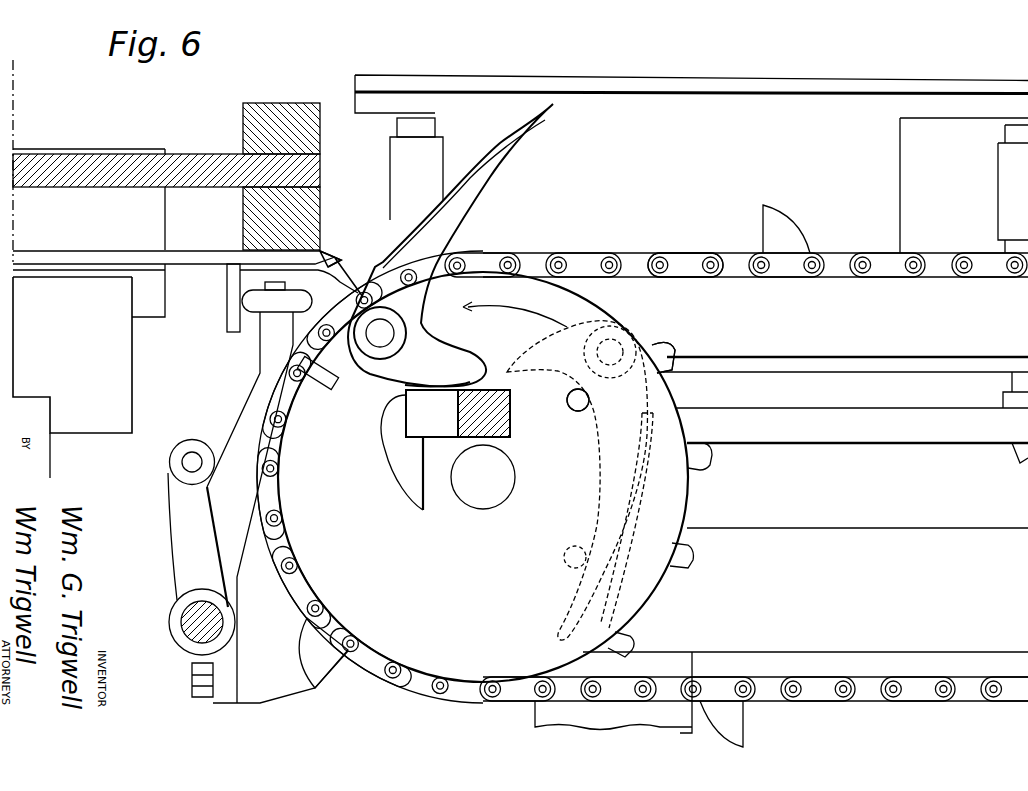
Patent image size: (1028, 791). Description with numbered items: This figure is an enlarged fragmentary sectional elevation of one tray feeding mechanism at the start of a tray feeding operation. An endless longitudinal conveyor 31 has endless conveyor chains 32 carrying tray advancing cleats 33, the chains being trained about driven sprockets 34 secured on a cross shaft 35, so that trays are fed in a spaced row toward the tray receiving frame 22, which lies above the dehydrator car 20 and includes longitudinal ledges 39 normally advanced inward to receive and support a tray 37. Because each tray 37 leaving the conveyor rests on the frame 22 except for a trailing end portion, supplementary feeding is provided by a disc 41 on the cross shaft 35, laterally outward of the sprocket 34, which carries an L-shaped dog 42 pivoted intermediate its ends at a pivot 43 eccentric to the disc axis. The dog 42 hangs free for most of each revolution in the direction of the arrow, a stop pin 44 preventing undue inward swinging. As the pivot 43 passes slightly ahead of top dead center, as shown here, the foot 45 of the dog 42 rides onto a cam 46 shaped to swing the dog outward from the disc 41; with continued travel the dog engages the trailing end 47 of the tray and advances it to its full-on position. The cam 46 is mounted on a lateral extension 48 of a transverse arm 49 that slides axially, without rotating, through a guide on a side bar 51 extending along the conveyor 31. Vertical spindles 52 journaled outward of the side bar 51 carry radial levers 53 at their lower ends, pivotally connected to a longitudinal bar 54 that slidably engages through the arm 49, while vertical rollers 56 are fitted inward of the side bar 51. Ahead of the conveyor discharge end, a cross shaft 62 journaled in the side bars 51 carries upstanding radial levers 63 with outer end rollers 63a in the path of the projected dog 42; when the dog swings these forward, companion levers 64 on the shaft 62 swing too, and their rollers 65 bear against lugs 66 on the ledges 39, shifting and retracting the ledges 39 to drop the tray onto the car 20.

The dehydrator car 20 is at (117, 372).
The tray receiving frame 22 is at (179, 229).
The endless longitudinal conveyor 31 is at (596, 245).
The endless conveyor chains 32 is at (677, 262).
The tray advancing cleats 33 is at (350, 258).
The driven sprockets 34 is at (665, 355).
The cross shaft 35 is at (480, 490).
The tray 37 is at (72, 157).
The longitudinal ledges 39 is at (97, 257).
The disc 41 is at (640, 583).
The L-shaped dog 42 is at (445, 200).
The pivot 43 is at (378, 338).
The stop pin 44 is at (574, 411).
The foot 45 is at (440, 370).
The cam 46 is at (395, 470).
The trailing end 47 is at (258, 128).
The lateral extension 48 is at (420, 415).
The transverse arm 49 is at (505, 410).
The side bar 51 is at (625, 80).
The vertical spindles 52 is at (1010, 385).
The radial levers 53 is at (1020, 463).
The longitudinal bar 54 is at (837, 425).
The vertical rollers 56 is at (405, 150).
The cross shaft 62 is at (190, 630).
The upstanding radial levers 63 is at (178, 530).
The outer end rollers 63a is at (170, 458).
The upstanding radial levers 64 is at (258, 403).
The rollers 65 is at (240, 332).
The lugs 66 is at (232, 290).